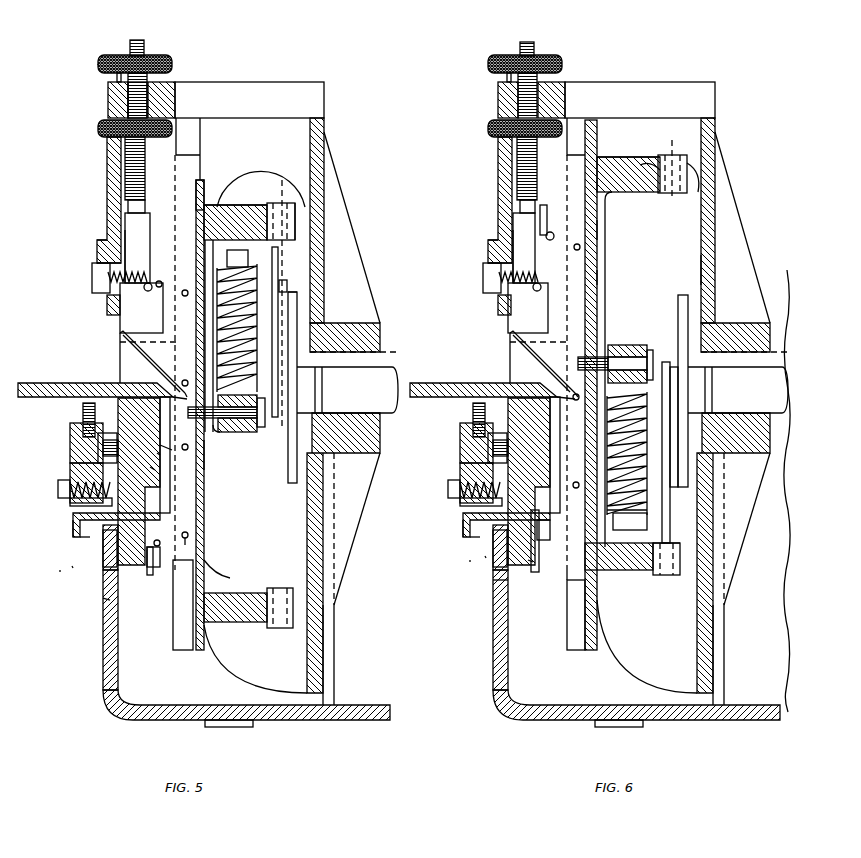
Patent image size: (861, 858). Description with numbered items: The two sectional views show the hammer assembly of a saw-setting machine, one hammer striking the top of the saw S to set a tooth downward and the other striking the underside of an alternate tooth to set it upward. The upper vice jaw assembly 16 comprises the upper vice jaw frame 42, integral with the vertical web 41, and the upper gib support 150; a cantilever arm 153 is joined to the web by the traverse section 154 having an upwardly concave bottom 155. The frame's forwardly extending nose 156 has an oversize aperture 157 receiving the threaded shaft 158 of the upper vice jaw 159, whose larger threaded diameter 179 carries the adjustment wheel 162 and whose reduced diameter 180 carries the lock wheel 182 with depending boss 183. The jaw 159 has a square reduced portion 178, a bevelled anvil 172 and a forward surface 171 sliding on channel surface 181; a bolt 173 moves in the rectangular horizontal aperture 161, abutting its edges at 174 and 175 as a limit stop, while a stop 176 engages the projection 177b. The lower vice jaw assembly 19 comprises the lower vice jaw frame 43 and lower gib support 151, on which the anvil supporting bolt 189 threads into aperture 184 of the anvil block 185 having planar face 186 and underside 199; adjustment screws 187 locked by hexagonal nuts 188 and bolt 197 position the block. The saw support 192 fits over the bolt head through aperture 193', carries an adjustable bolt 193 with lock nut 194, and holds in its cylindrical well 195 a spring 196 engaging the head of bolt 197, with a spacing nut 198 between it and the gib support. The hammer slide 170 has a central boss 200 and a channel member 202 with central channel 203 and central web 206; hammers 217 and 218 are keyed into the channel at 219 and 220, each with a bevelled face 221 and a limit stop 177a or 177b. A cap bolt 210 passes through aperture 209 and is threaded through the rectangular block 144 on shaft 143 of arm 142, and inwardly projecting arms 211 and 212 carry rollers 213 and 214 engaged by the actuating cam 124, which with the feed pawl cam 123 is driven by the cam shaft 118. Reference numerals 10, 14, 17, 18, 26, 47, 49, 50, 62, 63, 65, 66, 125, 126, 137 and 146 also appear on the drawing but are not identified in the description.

In FIG. 5, the housing 10 is at (340, 722).
In FIG. 6, the housing 10 is at (748, 722).
In FIG. 5, the foot 14 is at (229, 728).
In FIG. 6, the foot 14 is at (621, 728).
In FIG. 5, the upper vice jaw assembly 16 is at (93, 66).
In FIG. 5, the wall portion 17 is at (72, 566).
In FIG. 6, the wall portion 17 is at (487, 545).
In FIG. 5, the side wall 18 is at (108, 572).
In FIG. 6, the side wall 18 is at (498, 575).
In FIG. 5, the lower vice jaw assembly 19 is at (60, 570).
In FIG. 6, the lower vice jaw assembly 19 is at (465, 545).
In FIG. 5, the rod 26 is at (336, 672).
In FIG. 6, the rod 26 is at (726, 672).
In FIG. 5, the vertical web 41 is at (324, 500).
In FIG. 6, the vertical web 41 is at (714, 606).
In FIG. 5, the upper vice jaw frame 42 is at (293, 83).
In FIG. 6, the upper vice jaw frame 42 is at (628, 83).
In FIG. 5, the lower vice jaw frame 43 is at (232, 680).
In FIG. 6, the lower vice jaw frame 43 is at (620, 676).
In FIG. 5, the inclined wall 47 is at (348, 217).
In FIG. 6, the inclined wall 47 is at (735, 200).
In FIG. 5, the inclined wall 49 is at (349, 560).
In FIG. 6, the inclined wall 49 is at (749, 560).
In FIG. 5, the bearing block 50 is at (349, 332).
In FIG. 6, the bearing block 50 is at (774, 332).
In FIG. 5, the bracket leg 62 is at (72, 538).
In FIG. 6, the bracket leg 62 is at (462, 538).
In FIG. 5, the rod 63 is at (176, 385).
In FIG. 6, the rod 63 is at (555, 455).
In FIG. 5, the opening 65 is at (158, 553).
In FIG. 6, the opening 65 is at (550, 525).
In FIG. 5, the bracket 66 is at (85, 540).
In FIG. 6, the bracket 66 is at (466, 532).
In FIG. 5, the cam shaft 118 is at (373, 396).
In FIG. 6, the cam shaft 118 is at (763, 393).
In FIG. 5, the feed pawl cam 123 is at (320, 283).
In FIG. 6, the feed pawl cam 123 is at (690, 321).
In FIG. 5, the actuating cam 124 is at (283, 200).
In FIG. 6, the actuating cam 124 is at (672, 497).
In FIG. 5, the bar 125 is at (292, 485).
In FIG. 6, the bar 125 is at (706, 270).
In FIG. 6, the plate 126 is at (679, 487).
In FIG. 5, the spring seat 137 is at (236, 258).
In FIG. 6, the spring seat 137 is at (649, 575).
In FIG. 5, the arm 142 is at (257, 406).
In FIG. 6, the arm 142 is at (628, 344).
In FIG. 5, the shaft 143 is at (299, 293).
In FIG. 6, the shaft 143 is at (632, 497).
In FIG. 6, the rectangular block 144 is at (640, 345).
In FIG. 5, the spring cap 146 is at (288, 286).
In FIG. 6, the spring cap 146 is at (648, 504).
In FIG. 5, the upper gib support 150 is at (106, 157).
In FIG. 6, the upper gib support 150 is at (497, 147).
In FIG. 5, the lower gib support 151 is at (104, 560).
In FIG. 6, the lower gib support 151 is at (494, 560).
In FIG. 5, the cantilever arm 153 is at (214, 250).
In FIG. 6, the cantilever arm 153 is at (606, 214).
In FIG. 5, the traverse section 154 is at (296, 130).
In FIG. 6, the traverse section 154 is at (688, 130).
In FIG. 5, the upwardly concave bottom 155 is at (265, 162).
In FIG. 6, the upwardly concave bottom 155 is at (640, 160).
In FIG. 5, the forwardly extending nose 156 is at (108, 105).
In FIG. 6, the forwardly extending nose 156 is at (498, 104).
In FIG. 5, the oversize aperture 157 is at (128, 88).
In FIG. 6, the oversize aperture 157 is at (518, 88).
In FIG. 5, the threaded shaft 158 is at (137, 40).
In FIG. 6, the threaded shaft 158 is at (527, 42).
In FIG. 5, the upper vice jaw 159 is at (130, 355).
In FIG. 6, the upper vice jaw 159 is at (519, 347).
In FIG. 5, the rectangular horizontal aperture 161 is at (110, 265).
In FIG. 6, the rectangular horizontal aperture 161 is at (500, 265).
In FIG. 5, the upper vice jaw adjustment wheel 162 is at (98, 128).
In FIG. 6, the upper vice jaw adjustment wheel 162 is at (488, 128).
In FIG. 5, the hammer slide 170 is at (206, 180).
In FIG. 6, the hammer slide 170 is at (596, 127).
In FIG. 5, the forward surface 171 is at (125, 225).
In FIG. 6, the forward surface 171 is at (513, 221).
In FIG. 5, the bevelled anvil 172 is at (139, 369).
In FIG. 6, the bevelled anvil 172 is at (513, 355).
In FIG. 5, the bolt 173 is at (93, 280).
In FIG. 6, the bolt 173 is at (484, 276).
In FIG. 5, the aperture edge 174 is at (100, 250).
In FIG. 6, the aperture edge 174 is at (492, 250).
In FIG. 5, the aperture edge 175 is at (107, 300).
In FIG. 6, the aperture edge 175 is at (498, 299).
In FIG. 5, the stop 176 is at (148, 292).
In FIG. 6, the stop 176 is at (537, 292).
In FIG. 5, the limit stop 177a is at (148, 575).
In FIG. 6, the limit stop 177a is at (538, 574).
In FIG. 5, the limit stop 177b is at (197, 205).
In FIG. 6, the limit stop 177b is at (545, 205).
In FIG. 5, the portion of reduced dimension 178 is at (147, 228).
In FIG. 6, the portion of reduced dimension 178 is at (522, 222).
In FIG. 5, the larger threaded diameter 179 is at (125, 180).
In FIG. 6, the larger threaded diameter 179 is at (517, 163).
In FIG. 5, the portion of reduced diameter 180 is at (148, 100).
In FIG. 5, the channel surface 181 is at (126, 220).
In FIG. 6, the channel surface 181 is at (520, 183).
In FIG. 5, the lock wheel 182 is at (172, 63).
In FIG. 6, the lock wheel 182 is at (548, 58).
In FIG. 5, the depending boss 183 is at (149, 79).
In FIG. 6, the depending boss 183 is at (540, 80).
In FIG. 5, the aperture 184 is at (158, 454).
In FIG. 5, the anvil block 185 is at (153, 467).
In FIG. 6, the anvil block 185 is at (498, 590).
In FIG. 5, the planar face 186 is at (185, 396).
In FIG. 6, the planar face 186 is at (580, 396).
In FIG. 5, the adjustment screw 187 is at (83, 408).
In FIG. 6, the adjustment screw 187 is at (505, 413).
In FIG. 5, the hexagonal nut 188 is at (183, 400).
In FIG. 6, the hexagonal nut 188 is at (572, 395).
In FIG. 5, the anvil supporting bolt 189 is at (100, 458).
In FIG. 6, the anvil supporting bolt 189 is at (490, 458).
In FIG. 5, the saw support 192 is at (68, 468).
In FIG. 6, the saw support 192 is at (458, 468).
In FIG. 5, the adjustable bolt 193 is at (69, 437).
In FIG. 6, the adjustable bolt 193 is at (460, 430).
In FIG. 5, the aperture 193' is at (72, 448).
In FIG. 6, the aperture 193' is at (466, 445).
In FIG. 5, the lock nut 194 is at (70, 447).
In FIG. 6, the lock nut 194 is at (460, 447).
In FIG. 5, the horizontal cylindrical well 195 is at (77, 523).
In FIG. 6, the horizontal cylindrical well 195 is at (463, 518).
In FIG. 5, the spring 196 is at (75, 505).
In FIG. 6, the spring 196 is at (460, 502).
In FIG. 5, the bolt 197 is at (58, 490).
In FIG. 6, the bolt 197 is at (448, 490).
In FIG. 5, the spacing nut 198 is at (113, 553).
In FIG. 6, the spacing nut 198 is at (492, 545).
In FIG. 5, the underside 199 is at (110, 600).
In FIG. 6, the underside 199 is at (530, 562).
In FIG. 5, the central boss 200 is at (216, 437).
In FIG. 5, the channel member 202 is at (204, 460).
In FIG. 6, the channel member 202 is at (598, 230).
In FIG. 5, the central vertically extending channel 203 is at (210, 206).
In FIG. 6, the central vertically extending channel 203 is at (588, 156).
In FIG. 5, the central web 206 is at (210, 566).
In FIG. 6, the central web 206 is at (598, 279).
In FIG. 5, the aperture 209 is at (245, 433).
In FIG. 6, the aperture 209 is at (603, 356).
In FIG. 5, the cap bolt 210 is at (263, 428).
In FIG. 6, the cap bolt 210 is at (652, 351).
In FIG. 5, the inwardly projecting arm 211 is at (237, 622).
In FIG. 6, the inwardly projecting arm 211 is at (633, 580).
In FIG. 5, the inwardly projecting arm 212 is at (255, 205).
In FIG. 6, the inwardly projecting arm 212 is at (619, 158).
In FIG. 5, the roller 213 is at (277, 628).
In FIG. 6, the roller 213 is at (680, 578).
In FIG. 5, the roller 214 is at (296, 215).
In FIG. 6, the roller 214 is at (672, 155).
In FIG. 5, the hammer 217 is at (164, 325).
In FIG. 6, the hammer 217 is at (578, 263).
In FIG. 5, the hammer 218 is at (188, 549).
In FIG. 6, the hammer 218 is at (578, 584).
In FIG. 5, the keying point 219 is at (240, 278).
In FIG. 6, the keying point 219 is at (580, 247).
In FIG. 5, the keying point 220 is at (189, 534).
In FIG. 6, the keying point 220 is at (568, 578).
In FIG. 5, the bevelled face 221 is at (120, 342).
In FIG. 6, the bevelled face 221 is at (583, 366).
In FIG. 5, the saw S is at (24, 383).
In FIG. 6, the saw S is at (440, 383).